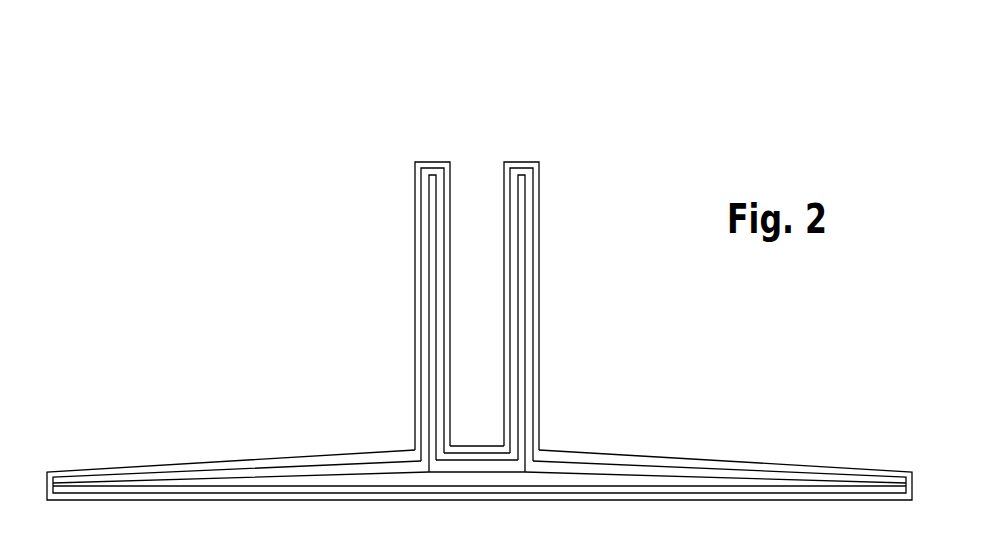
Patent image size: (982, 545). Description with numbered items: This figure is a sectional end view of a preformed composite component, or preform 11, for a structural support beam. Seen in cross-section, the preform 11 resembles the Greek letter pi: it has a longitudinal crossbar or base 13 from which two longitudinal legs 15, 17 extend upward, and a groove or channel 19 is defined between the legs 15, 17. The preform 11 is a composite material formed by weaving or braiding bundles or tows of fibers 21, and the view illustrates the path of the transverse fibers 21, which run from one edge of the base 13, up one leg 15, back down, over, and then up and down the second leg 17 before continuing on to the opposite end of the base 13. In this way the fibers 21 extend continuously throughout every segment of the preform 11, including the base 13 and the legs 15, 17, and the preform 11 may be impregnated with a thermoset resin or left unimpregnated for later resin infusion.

The preform 11 is at (578, 174).
The base 13 is at (685, 458).
The leg 15 is at (417, 268).
The leg 17 is at (540, 337).
The channel 19 is at (475, 148).
The fibers 21 is at (523, 258).